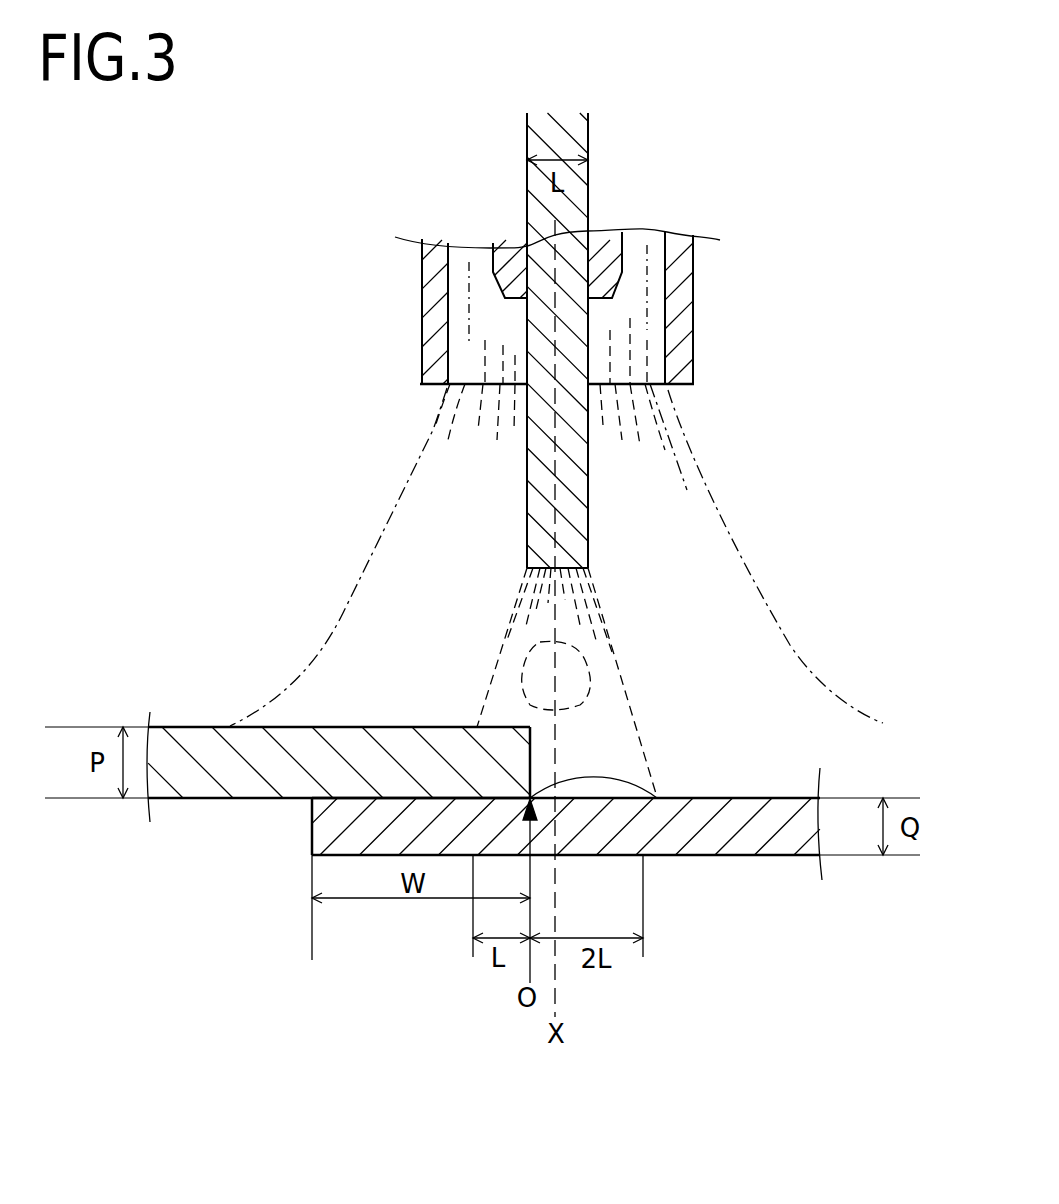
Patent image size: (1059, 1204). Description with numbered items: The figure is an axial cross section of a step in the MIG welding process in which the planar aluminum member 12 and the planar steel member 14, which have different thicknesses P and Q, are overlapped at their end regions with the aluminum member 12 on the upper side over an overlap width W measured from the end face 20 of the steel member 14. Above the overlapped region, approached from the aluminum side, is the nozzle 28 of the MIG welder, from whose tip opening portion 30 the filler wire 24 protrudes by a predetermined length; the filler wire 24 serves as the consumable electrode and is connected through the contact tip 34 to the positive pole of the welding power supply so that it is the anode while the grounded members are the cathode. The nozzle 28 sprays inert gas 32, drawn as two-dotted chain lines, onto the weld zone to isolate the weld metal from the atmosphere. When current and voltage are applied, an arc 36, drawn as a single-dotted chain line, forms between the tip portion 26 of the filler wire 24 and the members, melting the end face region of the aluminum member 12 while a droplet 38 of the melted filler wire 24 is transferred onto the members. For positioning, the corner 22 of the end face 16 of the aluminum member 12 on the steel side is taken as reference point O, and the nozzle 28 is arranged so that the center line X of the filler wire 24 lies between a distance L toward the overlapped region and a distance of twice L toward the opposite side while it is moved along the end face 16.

The aluminum member 12 is at (187, 702).
The steel member 14 is at (767, 877).
The end face 16 is at (531, 785).
The end face 20 is at (310, 830).
The corner 22 is at (655, 797).
The filler wire 24 is at (570, 485).
The tip portion 26 is at (560, 570).
The nozzle 28 is at (719, 312).
The tip opening portion 30 is at (658, 385).
The inert gas 32 is at (438, 425).
The contact tip 34 is at (508, 266).
The arc 36 is at (512, 598).
The droplet 38 is at (565, 683).